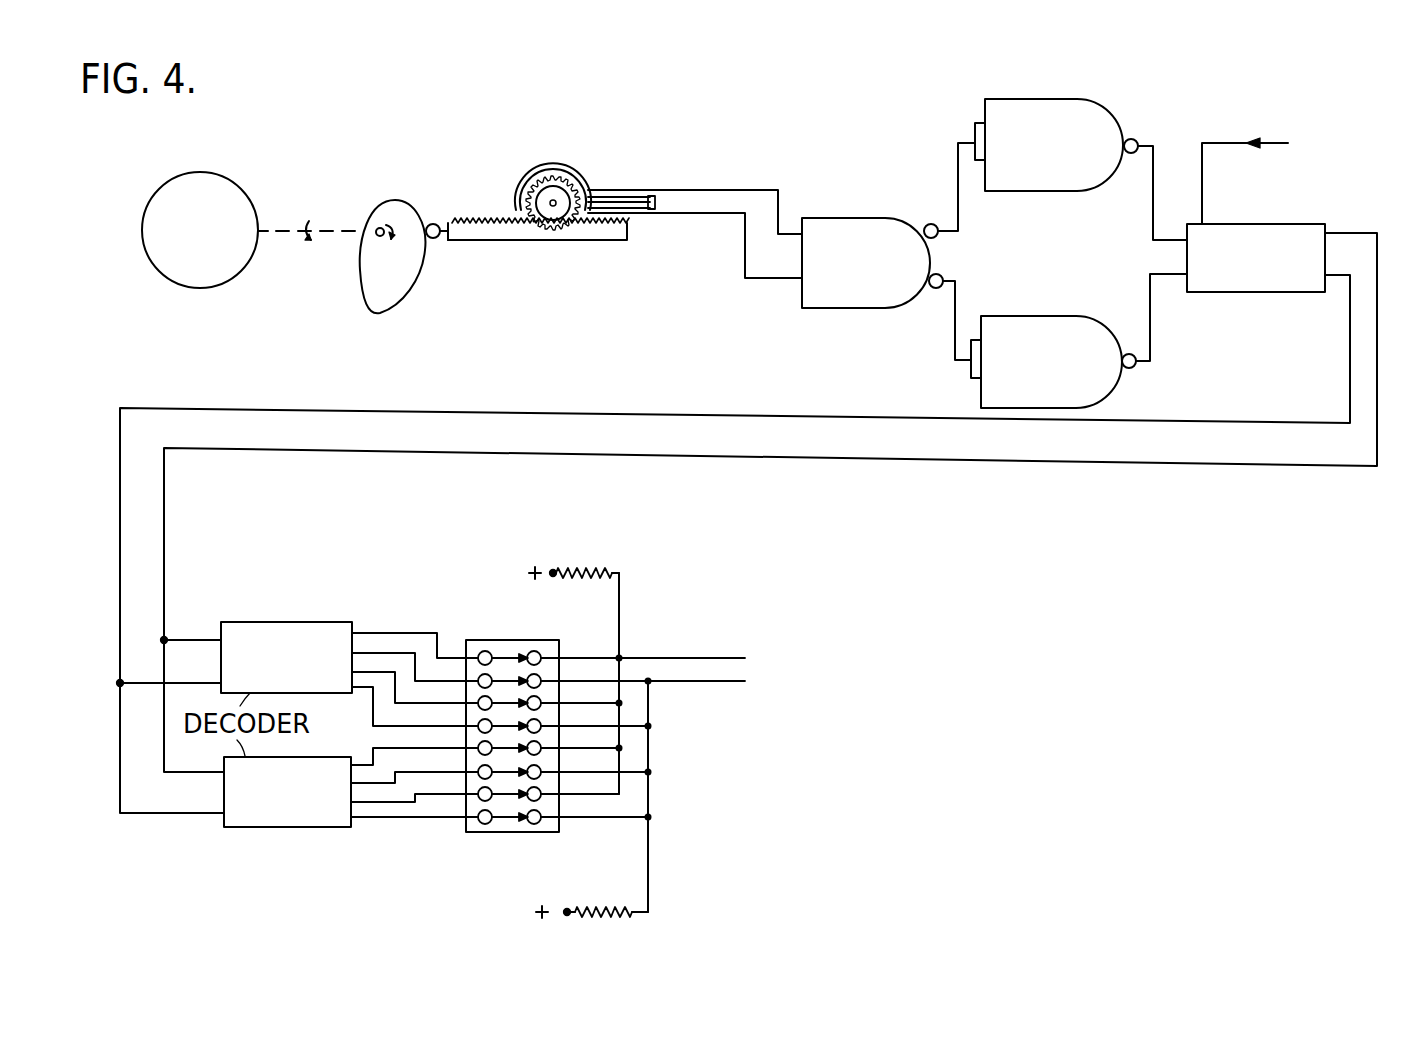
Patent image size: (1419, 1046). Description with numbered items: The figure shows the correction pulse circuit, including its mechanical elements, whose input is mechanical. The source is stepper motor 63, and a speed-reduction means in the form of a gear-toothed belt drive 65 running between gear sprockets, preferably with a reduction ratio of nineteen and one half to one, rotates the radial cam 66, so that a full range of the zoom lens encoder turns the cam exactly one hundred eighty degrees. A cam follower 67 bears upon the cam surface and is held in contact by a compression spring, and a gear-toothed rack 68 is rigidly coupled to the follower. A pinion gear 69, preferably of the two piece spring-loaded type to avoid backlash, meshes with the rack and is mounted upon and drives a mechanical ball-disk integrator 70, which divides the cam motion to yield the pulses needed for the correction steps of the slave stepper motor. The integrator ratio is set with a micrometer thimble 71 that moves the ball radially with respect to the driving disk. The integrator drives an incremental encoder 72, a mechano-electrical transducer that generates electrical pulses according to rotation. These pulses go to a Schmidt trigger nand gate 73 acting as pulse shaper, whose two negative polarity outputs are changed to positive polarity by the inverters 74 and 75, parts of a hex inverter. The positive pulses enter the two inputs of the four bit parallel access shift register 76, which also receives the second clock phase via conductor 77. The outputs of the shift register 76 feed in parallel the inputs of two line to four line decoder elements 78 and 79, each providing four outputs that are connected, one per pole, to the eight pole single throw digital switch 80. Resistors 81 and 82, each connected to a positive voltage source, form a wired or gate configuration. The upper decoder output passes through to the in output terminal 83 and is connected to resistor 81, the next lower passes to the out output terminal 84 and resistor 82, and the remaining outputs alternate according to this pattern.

The stepper motor 63 is at (246, 204).
The belt drive 65 is at (333, 227).
The cam 66 is at (396, 207).
The cam follower 67 is at (434, 223).
The gear-toothed rack 68 is at (487, 222).
The pinion gear 69 is at (529, 193).
The ball-disk integrator 70 is at (562, 171).
The micrometer thimble 71 is at (634, 214).
The incremental encoder 72 is at (580, 188).
The Schmidt trigger nand gate 73 is at (872, 218).
The inverter 74 is at (1108, 130).
The inverter 75 is at (1078, 319).
The shift register 76 is at (1272, 227).
The conductor 77 is at (1203, 199).
The decoder element 78 is at (321, 624).
The decoder element 79 is at (327, 759).
The digital switch 80 is at (503, 641).
The resistor 81 is at (580, 563).
The resistor 82 is at (596, 902).
The in output terminal 83 is at (745, 661).
The out output terminal 84 is at (742, 683).